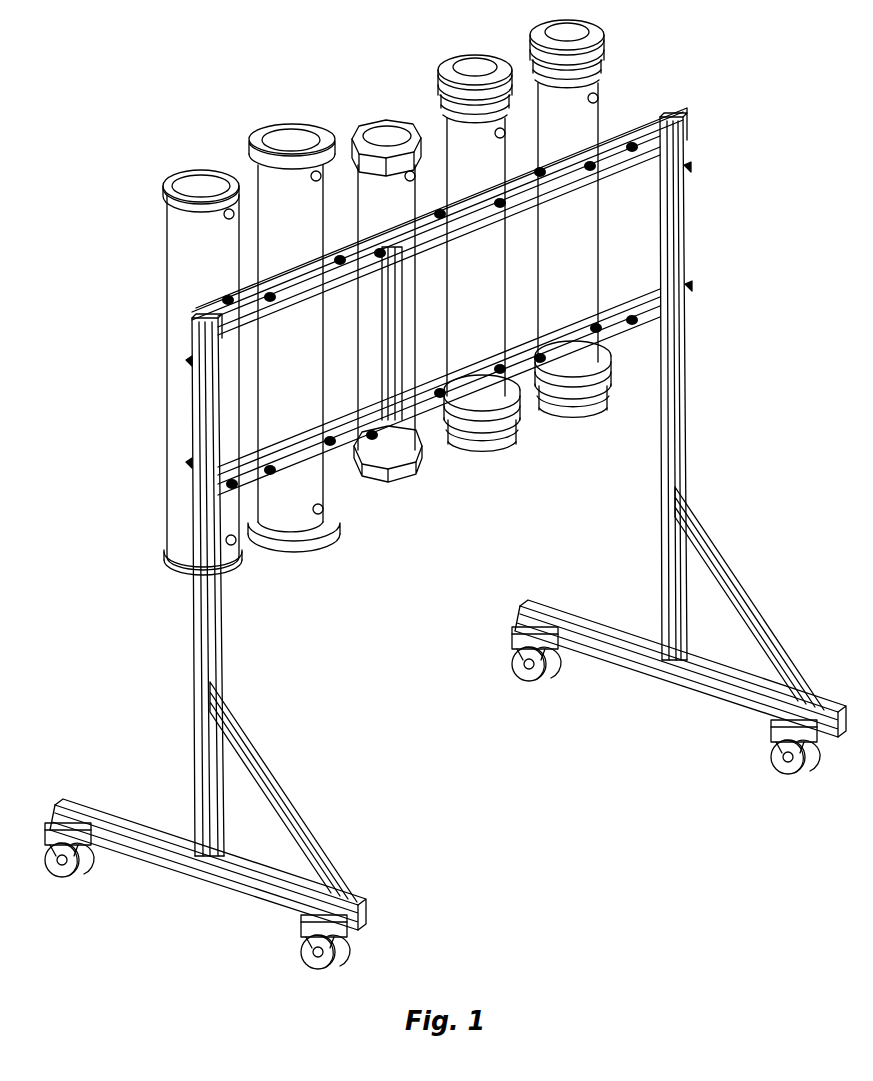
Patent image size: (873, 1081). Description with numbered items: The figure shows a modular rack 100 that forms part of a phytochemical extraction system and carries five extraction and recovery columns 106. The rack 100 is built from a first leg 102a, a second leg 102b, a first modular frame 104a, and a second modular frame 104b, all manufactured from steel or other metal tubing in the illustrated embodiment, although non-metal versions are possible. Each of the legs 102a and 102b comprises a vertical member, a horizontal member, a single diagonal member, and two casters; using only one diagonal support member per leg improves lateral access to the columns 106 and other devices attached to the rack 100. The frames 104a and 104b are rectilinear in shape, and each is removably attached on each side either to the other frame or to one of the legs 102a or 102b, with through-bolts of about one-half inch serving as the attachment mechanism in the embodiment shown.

The modular rack 100 is at (681, 109).
The first leg 102a is at (684, 345).
The second leg 102b is at (200, 603).
The first modular frame 104a is at (340, 452).
The second modular frame 104b is at (517, 373).
The extraction and recovery column 106 is at (185, 265).